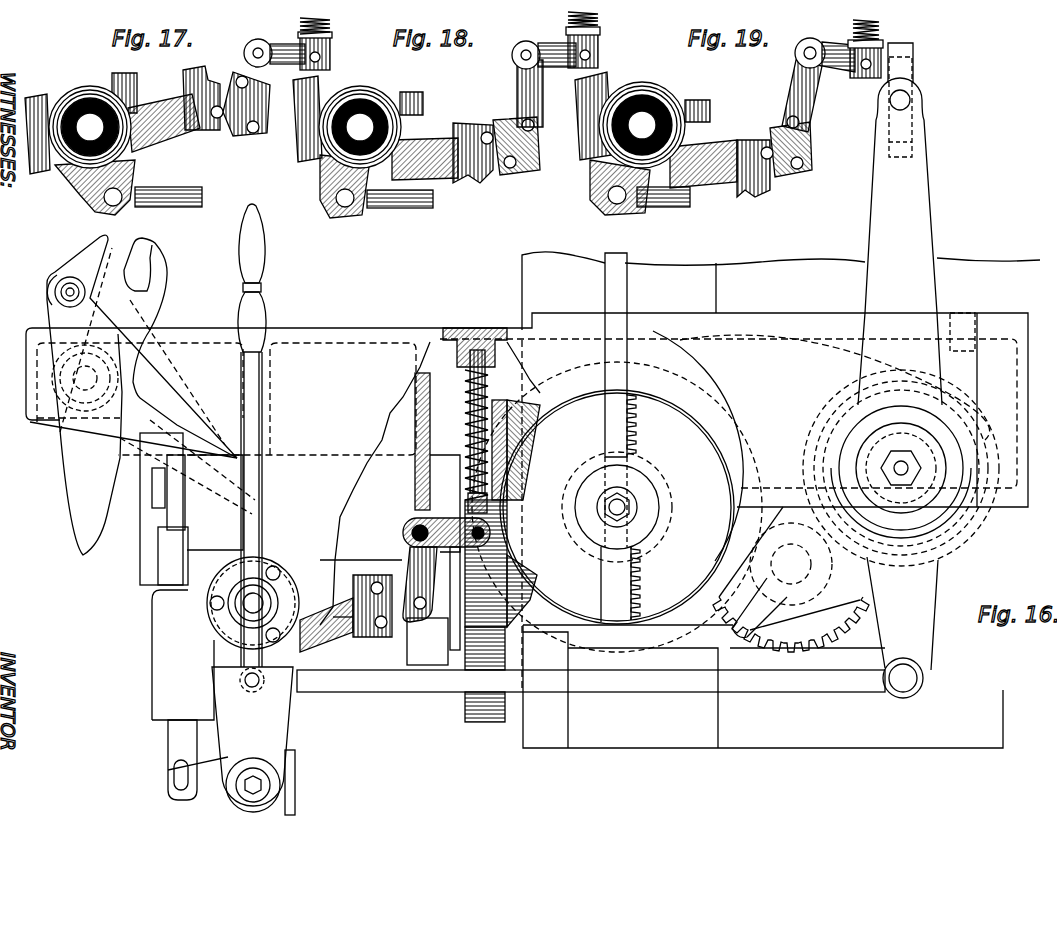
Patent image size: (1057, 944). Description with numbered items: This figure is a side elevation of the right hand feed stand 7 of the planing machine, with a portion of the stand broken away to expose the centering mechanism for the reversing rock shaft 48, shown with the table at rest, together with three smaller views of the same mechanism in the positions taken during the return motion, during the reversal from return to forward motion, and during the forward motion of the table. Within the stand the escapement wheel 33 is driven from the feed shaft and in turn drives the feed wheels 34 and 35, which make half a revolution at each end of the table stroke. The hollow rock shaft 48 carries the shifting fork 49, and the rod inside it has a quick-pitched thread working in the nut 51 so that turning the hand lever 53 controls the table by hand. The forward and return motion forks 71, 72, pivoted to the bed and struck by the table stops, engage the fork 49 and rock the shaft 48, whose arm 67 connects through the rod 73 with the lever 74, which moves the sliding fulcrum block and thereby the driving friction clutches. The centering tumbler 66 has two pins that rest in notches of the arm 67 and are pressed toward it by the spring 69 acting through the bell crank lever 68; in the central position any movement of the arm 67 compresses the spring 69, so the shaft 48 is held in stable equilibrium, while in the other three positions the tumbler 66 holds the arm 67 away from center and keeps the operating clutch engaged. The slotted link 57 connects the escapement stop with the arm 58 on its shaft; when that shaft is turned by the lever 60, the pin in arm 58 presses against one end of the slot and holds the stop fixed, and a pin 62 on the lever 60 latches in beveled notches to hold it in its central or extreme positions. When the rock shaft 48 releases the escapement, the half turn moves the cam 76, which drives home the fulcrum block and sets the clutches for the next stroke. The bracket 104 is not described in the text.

In FIG. 16, the right hand feed stand 7 is at (533, 500).
In FIG. 16, the escapement wheel 33 is at (470, 698).
In FIG. 16, the feed wheel 34 is at (502, 535).
In FIG. 16, the feed wheel 35 is at (617, 452).
In FIG. 17, the reversing rock shaft 48 is at (88, 100).
In FIG. 18, the reversing rock shaft 48 is at (372, 110).
In FIG. 19, the reversing rock shaft 48 is at (662, 108).
In FIG. 16, the reversing rock shaft 48 is at (284, 580).
In FIG. 16, the shifting fork 49 is at (197, 587).
In FIG. 16, the nut 51 is at (259, 603).
In FIG. 16, the hand lever 53 is at (252, 248).
In FIG. 16, the slotted link 57 is at (182, 760).
In FIG. 16, the arm 58 is at (242, 785).
In FIG. 16, the lever 60 is at (231, 553).
In FIG. 16, the pin 62 is at (258, 688).
In FIG. 17, the centering tumbler 66 is at (240, 110).
In FIG. 18, the centering tumbler 66 is at (531, 150).
In FIG. 19, the centering tumbler 66 is at (810, 140).
In FIG. 16, the centering tumbler 66 is at (378, 611).
In FIG. 17, the arm 67 is at (176, 138).
In FIG. 18, the arm 67 is at (393, 147).
In FIG. 19, the arm 67 is at (672, 143).
In FIG. 16, the arm 67 is at (326, 628).
In FIG. 17, the bell crank lever 68 is at (274, 53).
In FIG. 18, the bell crank lever 68 is at (544, 84).
In FIG. 19, the bell crank lever 68 is at (818, 85).
In FIG. 16, the bell crank lever 68 is at (446, 591).
In FIG. 17, the spring 69 is at (322, 22).
In FIG. 18, the spring 69 is at (598, 20).
In FIG. 19, the spring 69 is at (878, 24).
In FIG. 16, the spring 69 is at (463, 420).
In FIG. 16, the forward motion fork 71 is at (142, 395).
In FIG. 16, the return motion fork 72 is at (72, 283).
In FIG. 17, the rod 73 is at (202, 197).
In FIG. 18, the rod 73 is at (433, 200).
In FIG. 19, the rod 73 is at (690, 197).
In FIG. 16, the rod 73 is at (591, 681).
In FIG. 16, the lever 74 is at (901, 370).
In FIG. 16, the cam 76 is at (821, 491).
In FIG. 16, the bracket 104 is at (145, 518).